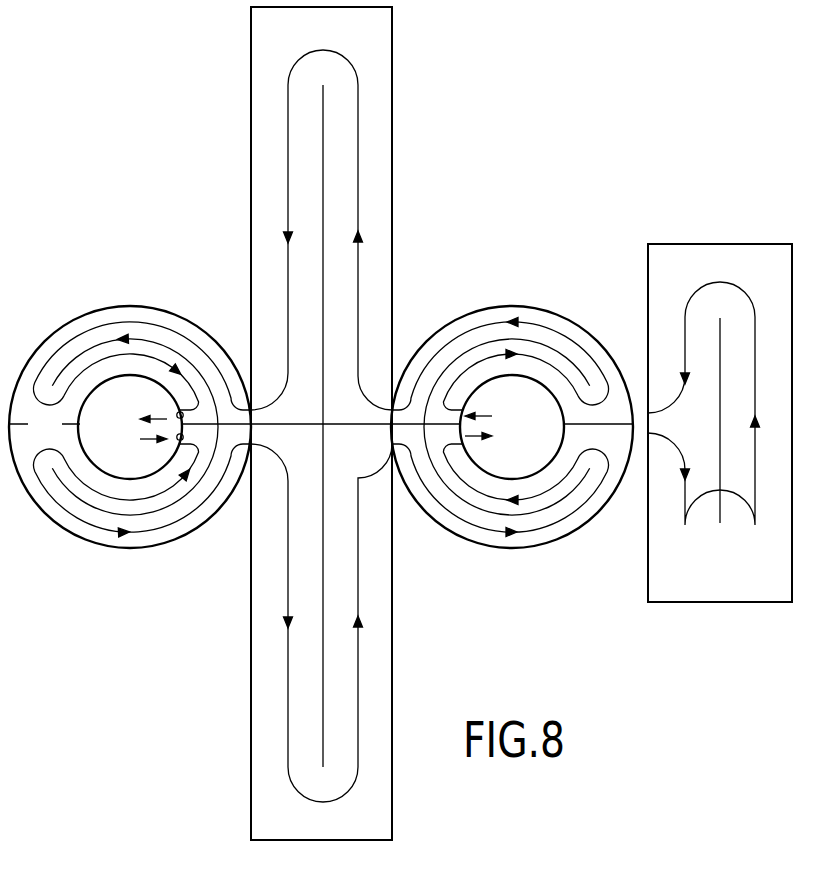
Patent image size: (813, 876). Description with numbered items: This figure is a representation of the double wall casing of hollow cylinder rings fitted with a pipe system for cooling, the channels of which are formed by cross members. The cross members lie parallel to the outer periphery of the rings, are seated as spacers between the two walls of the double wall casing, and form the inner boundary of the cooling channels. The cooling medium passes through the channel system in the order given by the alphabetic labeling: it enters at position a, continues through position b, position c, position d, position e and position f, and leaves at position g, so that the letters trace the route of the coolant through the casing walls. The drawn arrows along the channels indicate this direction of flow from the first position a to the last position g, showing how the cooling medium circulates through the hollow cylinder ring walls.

The cooling medium flow position a is at (130, 427).
The cooling medium flow position b is at (321, 424).
The cooling medium flow position c is at (512, 458).
The cooling medium flow position d is at (491, 454).
The cooling medium flow position e is at (720, 423).
The cooling medium flow position f is at (488, 401).
The cooling medium flow position g is at (151, 401).